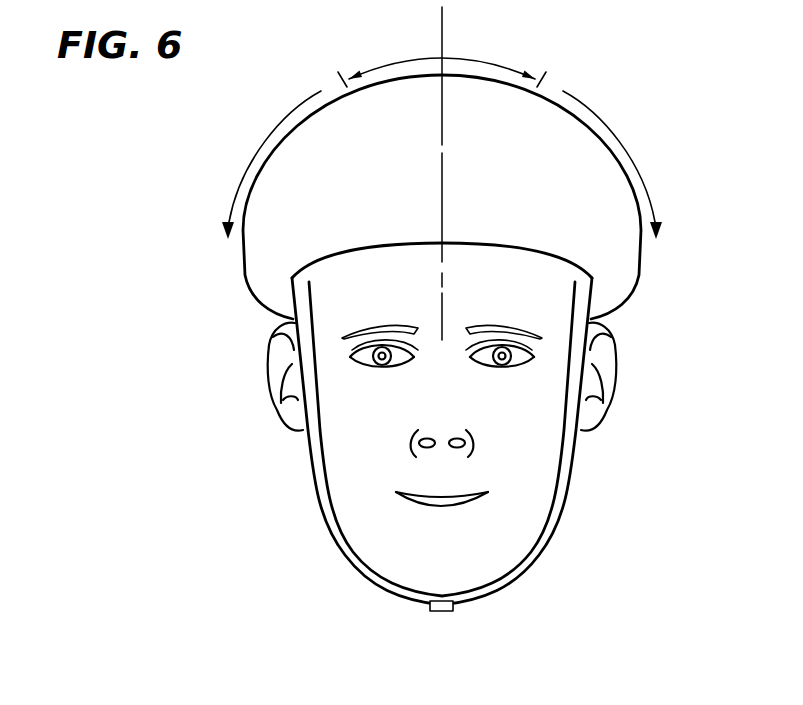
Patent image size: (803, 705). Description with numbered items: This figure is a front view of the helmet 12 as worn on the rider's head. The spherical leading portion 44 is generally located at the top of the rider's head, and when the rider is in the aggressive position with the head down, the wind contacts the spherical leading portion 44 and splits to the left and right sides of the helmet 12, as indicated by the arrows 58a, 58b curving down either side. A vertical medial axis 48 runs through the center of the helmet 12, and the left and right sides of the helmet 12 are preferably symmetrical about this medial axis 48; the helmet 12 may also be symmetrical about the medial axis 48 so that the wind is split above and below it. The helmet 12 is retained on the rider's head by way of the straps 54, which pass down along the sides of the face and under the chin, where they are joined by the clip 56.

The helmet 12 is at (525, 59).
The spherical leading portion 44 is at (392, 61).
The medial axis 48 is at (443, 160).
The straps 54 is at (575, 499).
The clip 56 is at (447, 612).
The arrow 58a is at (258, 143).
The arrow 58b is at (621, 142).